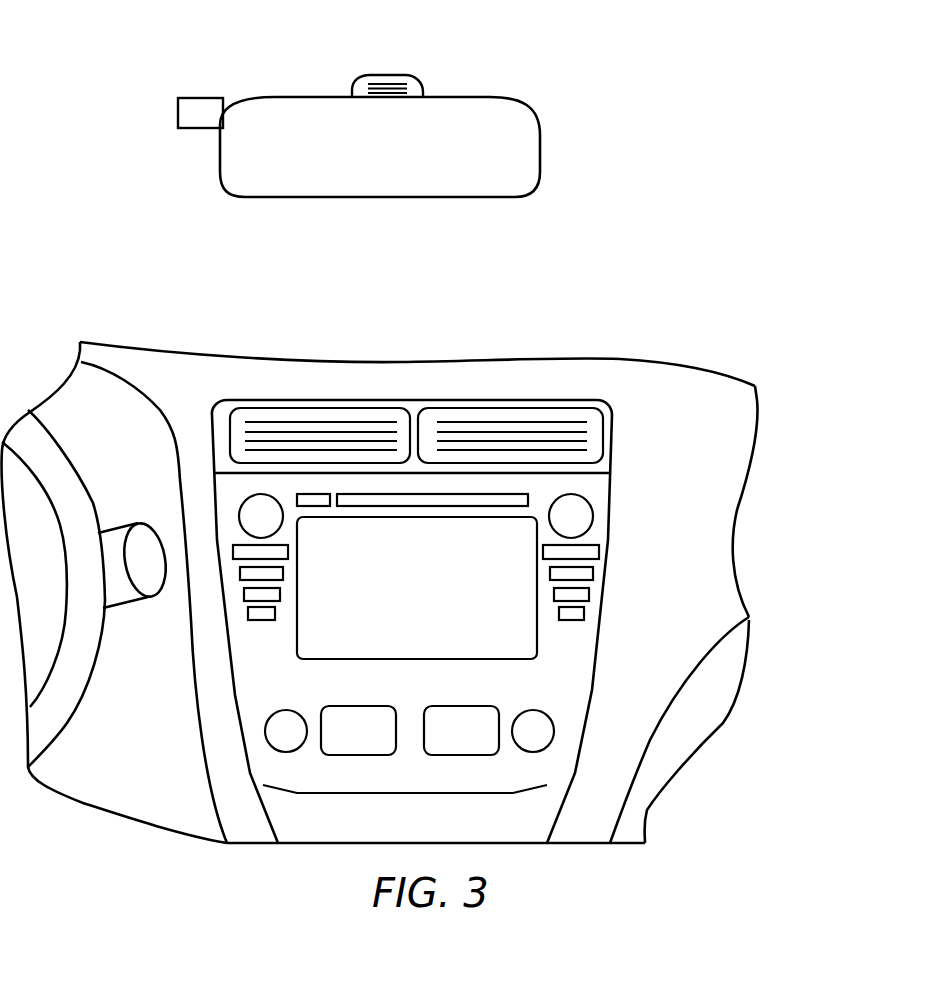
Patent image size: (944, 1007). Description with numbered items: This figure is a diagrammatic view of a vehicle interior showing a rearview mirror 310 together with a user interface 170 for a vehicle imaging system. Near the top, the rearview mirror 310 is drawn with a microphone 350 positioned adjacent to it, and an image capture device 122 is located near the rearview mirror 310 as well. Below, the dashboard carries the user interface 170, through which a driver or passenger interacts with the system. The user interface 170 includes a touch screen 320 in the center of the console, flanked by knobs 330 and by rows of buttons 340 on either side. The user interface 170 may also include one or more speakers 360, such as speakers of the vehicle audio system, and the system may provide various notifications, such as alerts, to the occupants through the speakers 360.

The user interface 170 is at (719, 158).
The rearview mirror 310 is at (542, 150).
The microphone 350 is at (424, 84).
The image capture device 122 is at (186, 130).
The touch screen 320 is at (472, 668).
The knobs 330 is at (593, 512).
The buttons 340 is at (600, 556).
The speakers 360 is at (554, 729).